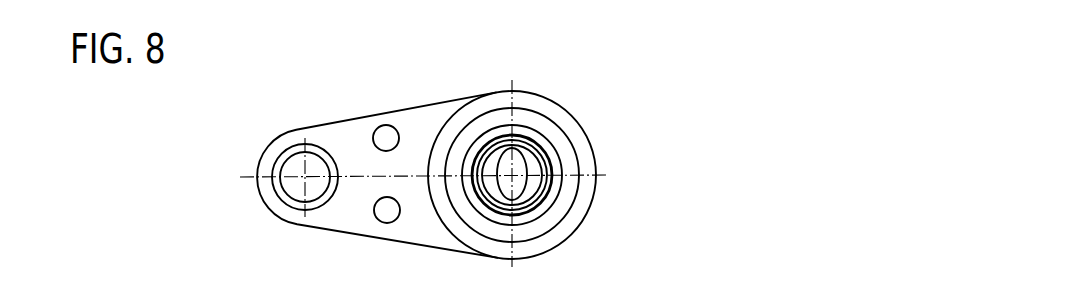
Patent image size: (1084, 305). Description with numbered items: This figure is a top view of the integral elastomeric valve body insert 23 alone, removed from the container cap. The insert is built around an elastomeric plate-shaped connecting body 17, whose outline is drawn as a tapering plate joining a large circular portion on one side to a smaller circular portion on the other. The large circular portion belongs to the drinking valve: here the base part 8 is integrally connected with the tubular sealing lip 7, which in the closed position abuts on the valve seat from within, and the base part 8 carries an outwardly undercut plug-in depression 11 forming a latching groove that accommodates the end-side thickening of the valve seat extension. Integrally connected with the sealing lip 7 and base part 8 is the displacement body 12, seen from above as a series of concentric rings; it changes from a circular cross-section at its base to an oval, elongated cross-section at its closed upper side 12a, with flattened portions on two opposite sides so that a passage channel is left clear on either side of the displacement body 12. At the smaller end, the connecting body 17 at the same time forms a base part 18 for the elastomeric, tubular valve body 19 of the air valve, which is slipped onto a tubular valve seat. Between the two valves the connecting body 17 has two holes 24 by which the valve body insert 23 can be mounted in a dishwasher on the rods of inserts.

The sealing lip 7 is at (530, 205).
The base part 8 is at (563, 201).
The plug-in depression 11 is at (586, 188).
The displacement body 12 is at (543, 170).
The upper side 12a is at (517, 162).
The connecting body 17 is at (348, 143).
The base part 18 is at (283, 186).
The valve body 19 is at (282, 162).
The valve body insert 23 is at (566, 98).
The holes 24 is at (392, 198).